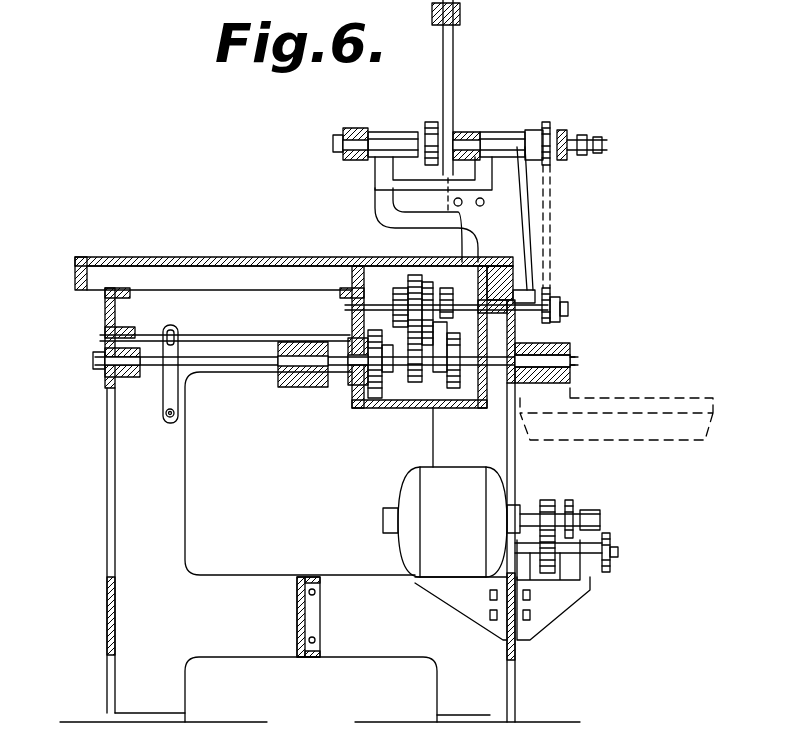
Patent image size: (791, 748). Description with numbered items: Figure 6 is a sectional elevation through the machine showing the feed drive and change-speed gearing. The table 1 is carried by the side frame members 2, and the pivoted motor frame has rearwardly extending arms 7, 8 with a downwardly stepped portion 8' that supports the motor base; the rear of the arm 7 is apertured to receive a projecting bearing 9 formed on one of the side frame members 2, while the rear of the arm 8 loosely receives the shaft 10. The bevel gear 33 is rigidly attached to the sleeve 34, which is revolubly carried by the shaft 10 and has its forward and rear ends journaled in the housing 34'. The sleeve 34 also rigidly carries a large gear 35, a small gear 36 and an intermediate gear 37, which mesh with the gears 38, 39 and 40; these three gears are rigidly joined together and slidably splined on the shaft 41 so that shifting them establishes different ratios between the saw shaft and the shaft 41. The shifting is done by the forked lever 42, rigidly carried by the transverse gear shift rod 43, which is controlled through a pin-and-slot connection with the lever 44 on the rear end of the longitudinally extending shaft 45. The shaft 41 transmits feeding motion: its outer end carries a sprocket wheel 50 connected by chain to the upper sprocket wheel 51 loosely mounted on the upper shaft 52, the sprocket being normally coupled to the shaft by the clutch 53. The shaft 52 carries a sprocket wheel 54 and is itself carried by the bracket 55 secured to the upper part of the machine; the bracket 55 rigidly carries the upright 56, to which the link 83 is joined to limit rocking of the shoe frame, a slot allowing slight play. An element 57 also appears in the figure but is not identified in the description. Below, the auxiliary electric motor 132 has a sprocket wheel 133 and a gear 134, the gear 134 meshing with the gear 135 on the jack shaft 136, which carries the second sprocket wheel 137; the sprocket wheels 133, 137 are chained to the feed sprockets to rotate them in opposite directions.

The table 1 is at (170, 257).
The side frame members 2 is at (104, 542).
The arm 7 is at (574, 383).
The arm 8 is at (334, 383).
The downwardly stepped portion 8' is at (618, 395).
The projecting bearing 9 is at (574, 368).
The shaft 10 is at (573, 357).
The bevel gear 33 is at (352, 386).
The sleeve 34 is at (423, 385).
The housing 34' is at (395, 316).
The large gear 35 is at (375, 397).
The small gear 36 is at (413, 386).
The intermediate gear 37 is at (455, 390).
The gear 38 is at (400, 287).
The gear 39 is at (412, 274).
The gear 40 is at (428, 282).
The shaft 41 is at (527, 247).
The forked lever 42 is at (463, 303).
The gear shift rod 43 is at (235, 339).
The lever 44 is at (172, 392).
The longitudinally extending shaft 45 is at (175, 418).
The sprocket wheel 50 is at (549, 290).
The upper sprocket wheel 51 is at (545, 122).
The upper shaft 52 is at (468, 140).
The clutch 53 is at (563, 128).
The sprocket wheel 54 is at (432, 122).
The bracket 55 is at (392, 180).
The upright 56 is at (452, 82).
The shaft 57 is at (358, 130).
The link 83 is at (434, 2).
The auxiliary electric motor 132 is at (440, 490).
The sprocket wheel 133 is at (572, 503).
The gear 134 is at (548, 500).
The gear 135 is at (545, 575).
The jack shaft 136 is at (620, 550).
The second sprocket wheel 137 is at (607, 540).